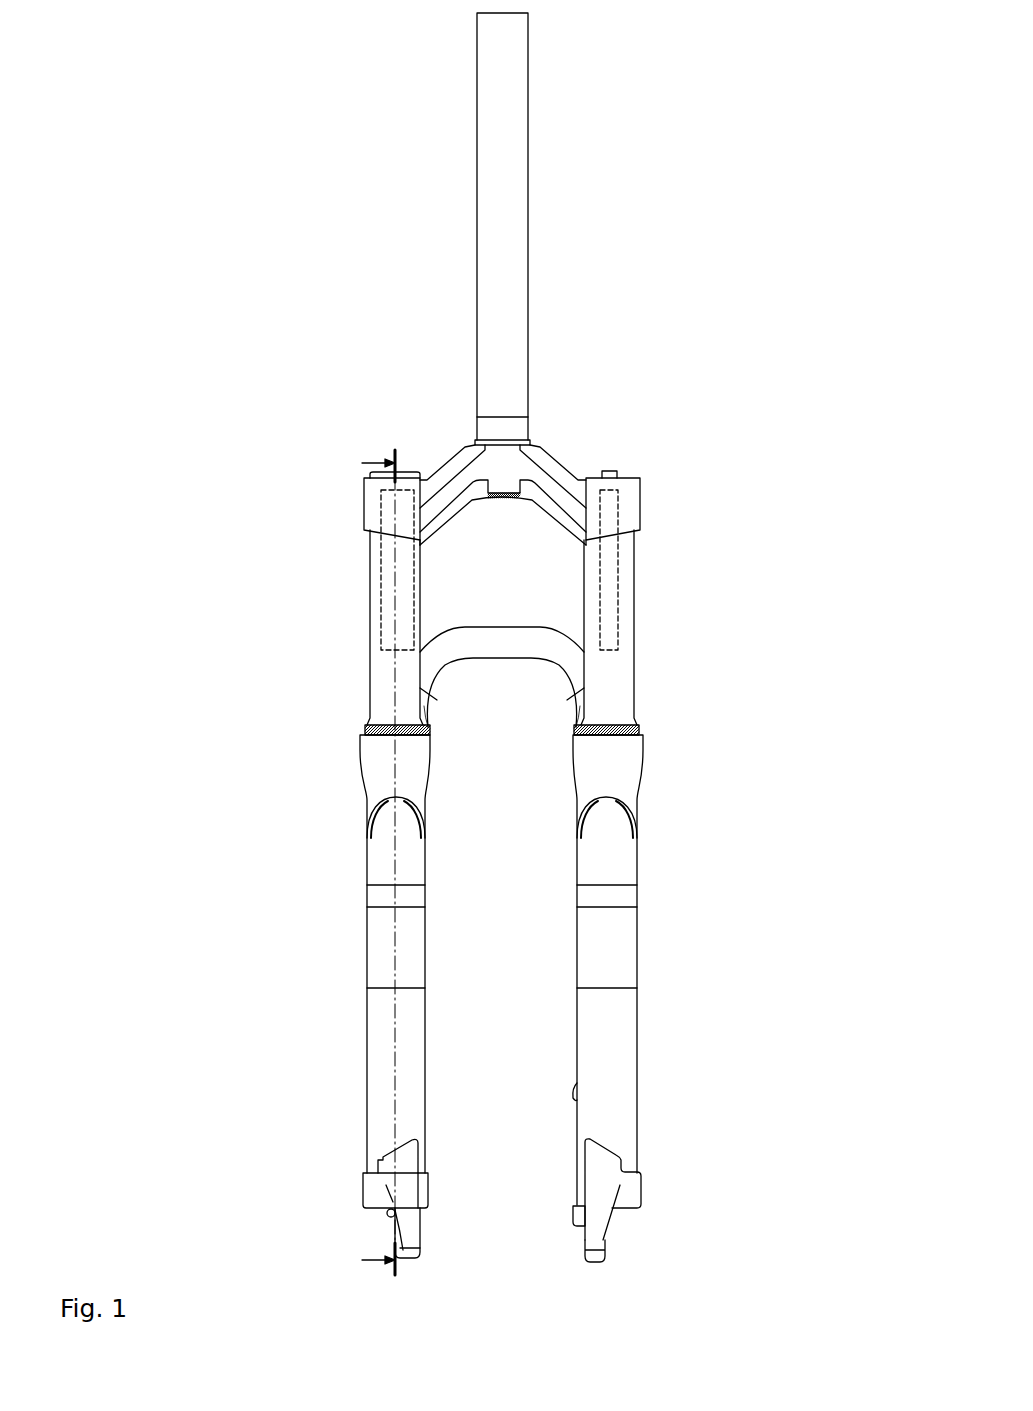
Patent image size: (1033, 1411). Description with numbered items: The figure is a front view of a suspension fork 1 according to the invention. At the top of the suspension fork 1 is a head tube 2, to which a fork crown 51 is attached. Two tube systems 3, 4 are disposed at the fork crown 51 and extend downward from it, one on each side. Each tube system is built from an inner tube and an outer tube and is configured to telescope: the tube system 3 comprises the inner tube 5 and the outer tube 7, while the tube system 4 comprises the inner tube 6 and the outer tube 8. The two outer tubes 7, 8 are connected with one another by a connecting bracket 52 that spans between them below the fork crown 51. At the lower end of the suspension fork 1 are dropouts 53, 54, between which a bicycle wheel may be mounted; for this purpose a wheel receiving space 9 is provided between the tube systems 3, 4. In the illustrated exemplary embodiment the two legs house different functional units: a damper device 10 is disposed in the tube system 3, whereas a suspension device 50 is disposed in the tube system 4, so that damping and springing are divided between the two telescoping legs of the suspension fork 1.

The suspension fork 1 is at (364, 196).
The head tube 2 is at (515, 62).
The tube system 3 is at (345, 580).
The tube system 4 is at (646, 580).
The inner tube 5 is at (370, 690).
The inner tube 6 is at (634, 690).
The outer tube 7 is at (368, 988).
The outer tube 8 is at (633, 973).
The wheel receiving space 9 is at (500, 1183).
The damper device 10 is at (383, 510).
The suspension device 50 is at (608, 515).
The fork crown 51 is at (560, 475).
The connecting bracket 52 is at (488, 680).
The dropout 53 is at (343, 1230).
The dropout 54 is at (630, 1240).